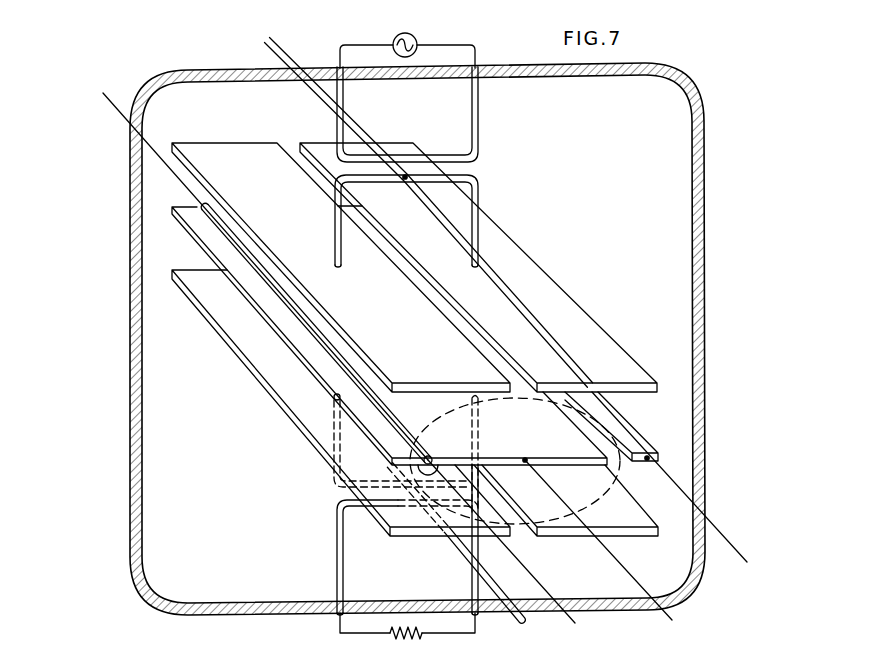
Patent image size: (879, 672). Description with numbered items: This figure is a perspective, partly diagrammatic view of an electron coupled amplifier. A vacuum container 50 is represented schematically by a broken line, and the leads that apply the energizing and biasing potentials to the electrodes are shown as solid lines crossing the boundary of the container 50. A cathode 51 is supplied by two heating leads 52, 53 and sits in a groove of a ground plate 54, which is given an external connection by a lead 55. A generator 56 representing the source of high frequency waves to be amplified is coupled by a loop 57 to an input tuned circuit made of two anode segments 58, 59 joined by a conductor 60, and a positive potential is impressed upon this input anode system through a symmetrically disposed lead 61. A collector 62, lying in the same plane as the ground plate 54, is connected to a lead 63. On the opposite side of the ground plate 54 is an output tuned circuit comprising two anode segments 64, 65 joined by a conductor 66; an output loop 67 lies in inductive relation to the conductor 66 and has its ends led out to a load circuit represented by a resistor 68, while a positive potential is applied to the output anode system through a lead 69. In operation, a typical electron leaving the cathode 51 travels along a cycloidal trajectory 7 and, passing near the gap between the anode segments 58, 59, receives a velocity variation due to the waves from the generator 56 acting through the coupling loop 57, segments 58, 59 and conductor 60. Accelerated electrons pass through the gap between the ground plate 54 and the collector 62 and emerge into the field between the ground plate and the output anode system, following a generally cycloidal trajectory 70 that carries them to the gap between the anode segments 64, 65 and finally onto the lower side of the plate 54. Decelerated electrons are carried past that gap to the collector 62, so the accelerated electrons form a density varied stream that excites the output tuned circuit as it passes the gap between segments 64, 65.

The cycloidal trajectory 7 is at (447, 413).
The vacuum container 50 is at (132, 418).
The cathode 51 is at (433, 458).
The heating lead 52 is at (536, 578).
The heating lead 53 is at (133, 131).
The ground plate 54 is at (326, 372).
The lead 55 is at (634, 578).
The generator 56 is at (413, 38).
The loop 57 is at (479, 121).
The anode segment 58 is at (226, 124).
The anode segment 59 is at (571, 290).
The conductor 60 is at (480, 185).
The lead 61 is at (274, 51).
The collector 62 is at (616, 418).
The lead 63 is at (716, 525).
The anode segment 64 is at (300, 410).
The anode segment 65 is at (630, 508).
The conductor 66 is at (339, 481).
The output loop 67 is at (337, 564).
The resistor 68 is at (406, 648).
The lead 69 is at (517, 586).
The cycloidal trajectory 70 is at (558, 518).